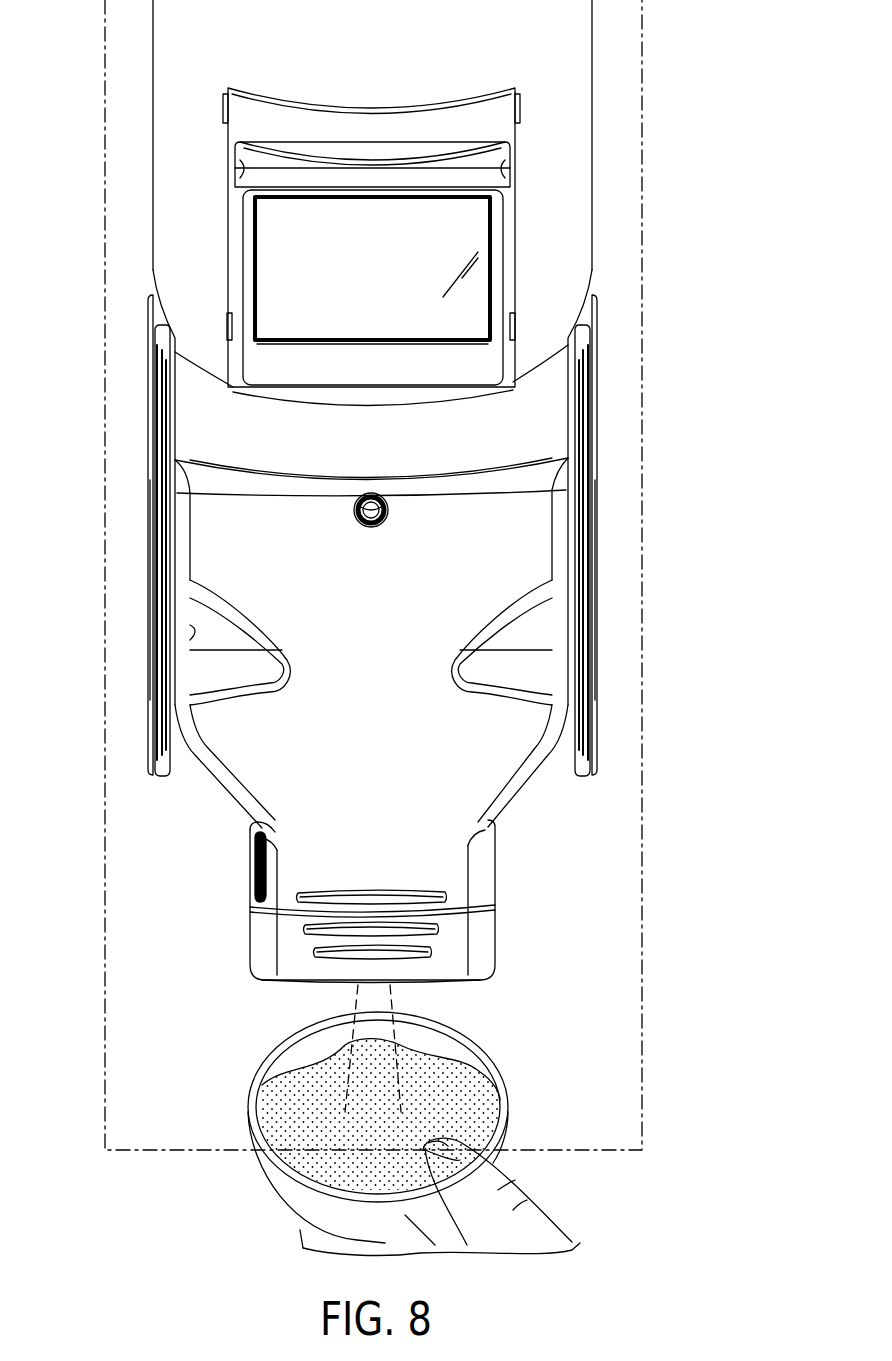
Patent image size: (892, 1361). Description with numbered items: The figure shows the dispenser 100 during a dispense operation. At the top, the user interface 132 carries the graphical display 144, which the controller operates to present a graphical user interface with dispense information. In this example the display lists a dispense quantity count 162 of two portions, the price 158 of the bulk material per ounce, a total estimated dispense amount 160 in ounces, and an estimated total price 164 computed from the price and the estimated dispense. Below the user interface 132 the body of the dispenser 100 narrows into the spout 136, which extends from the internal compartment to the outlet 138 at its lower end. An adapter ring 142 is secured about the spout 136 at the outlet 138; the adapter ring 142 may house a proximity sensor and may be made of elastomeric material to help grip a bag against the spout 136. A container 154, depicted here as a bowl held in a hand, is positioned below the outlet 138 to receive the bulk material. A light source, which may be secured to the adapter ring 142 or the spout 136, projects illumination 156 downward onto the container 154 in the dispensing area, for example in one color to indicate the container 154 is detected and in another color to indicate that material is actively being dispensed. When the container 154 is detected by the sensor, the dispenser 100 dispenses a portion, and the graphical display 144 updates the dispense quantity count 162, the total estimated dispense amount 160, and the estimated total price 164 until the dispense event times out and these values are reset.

The dispenser 100 is at (134, 183).
The user interface 132 is at (508, 205).
The spout 136 is at (292, 857).
The outlet 138 is at (322, 980).
The adapter ring 142 is at (473, 945).
The graphical display 144 is at (476, 237).
The container 154 is at (256, 1108).
The illumination 156 is at (405, 998).
The price 158 is at (250, 252).
The total estimated dispense amount 160 is at (250, 290).
The dispense quantity count 162 is at (460, 199).
The estimated total price 164 is at (476, 313).